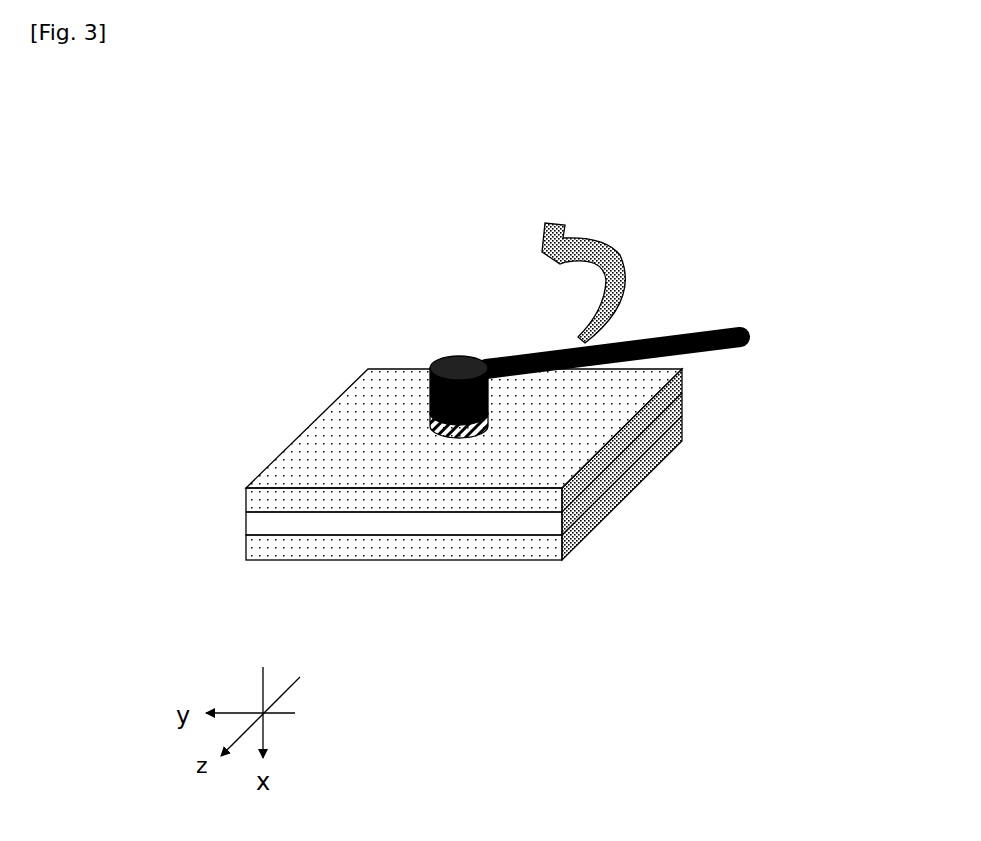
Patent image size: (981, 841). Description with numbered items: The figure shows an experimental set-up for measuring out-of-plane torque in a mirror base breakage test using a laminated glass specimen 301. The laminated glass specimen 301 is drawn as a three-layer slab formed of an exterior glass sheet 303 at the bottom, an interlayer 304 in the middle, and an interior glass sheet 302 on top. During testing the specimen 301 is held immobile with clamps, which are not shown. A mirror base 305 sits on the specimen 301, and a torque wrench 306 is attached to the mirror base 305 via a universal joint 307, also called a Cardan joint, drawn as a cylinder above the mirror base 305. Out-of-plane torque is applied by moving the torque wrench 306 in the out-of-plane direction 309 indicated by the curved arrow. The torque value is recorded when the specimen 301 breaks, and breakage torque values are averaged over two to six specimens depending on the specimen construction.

The laminated glass specimen 301 is at (296, 365).
The interior glass sheet 302 is at (278, 503).
The exterior glass sheet 303 is at (387, 550).
The interlayer 304 is at (482, 525).
The mirror base 305 is at (480, 437).
The torque wrench 306 is at (733, 327).
The universal joint 307 is at (462, 362).
The out-of-plane direction 309 is at (632, 235).